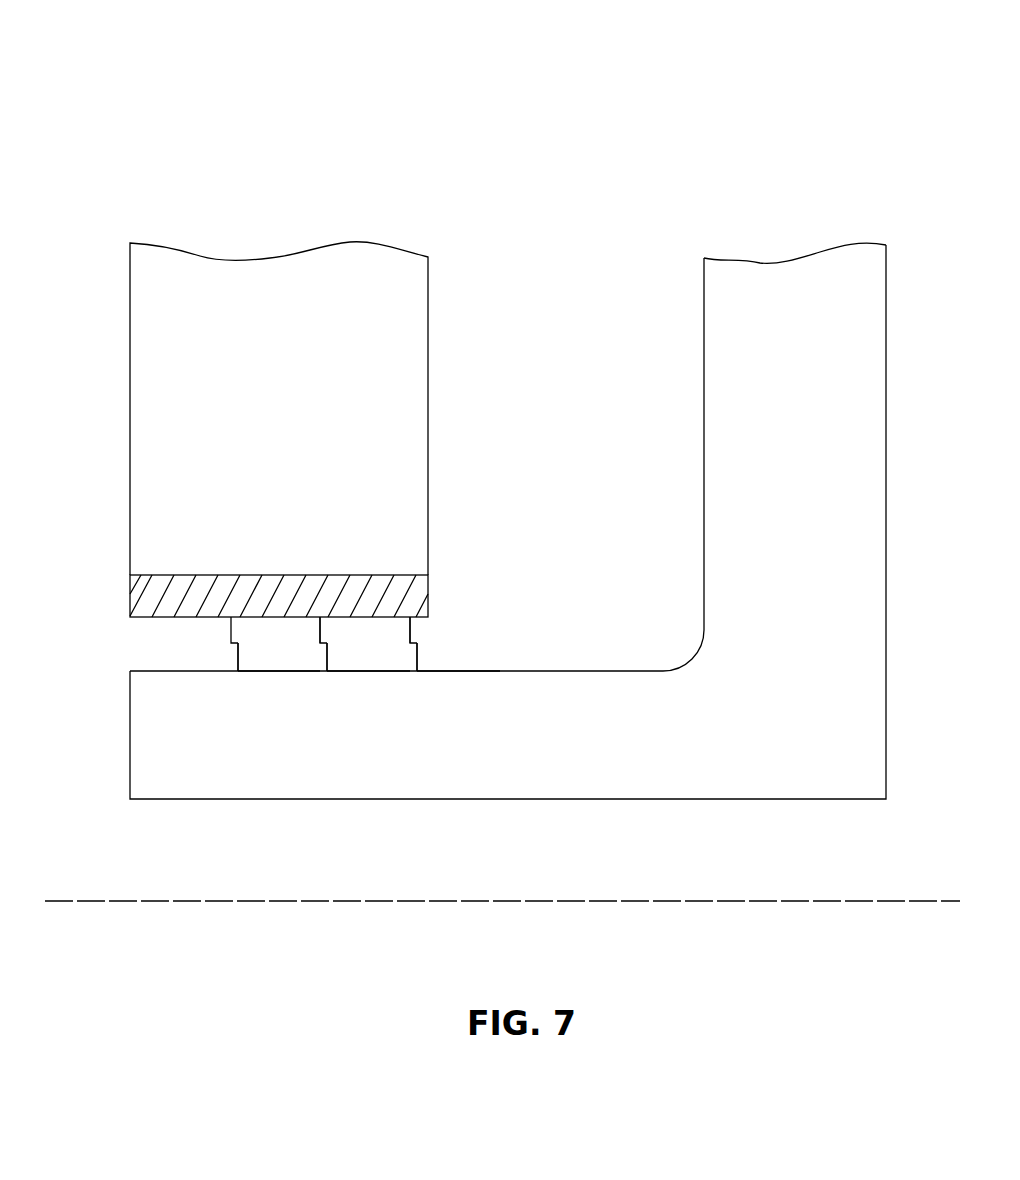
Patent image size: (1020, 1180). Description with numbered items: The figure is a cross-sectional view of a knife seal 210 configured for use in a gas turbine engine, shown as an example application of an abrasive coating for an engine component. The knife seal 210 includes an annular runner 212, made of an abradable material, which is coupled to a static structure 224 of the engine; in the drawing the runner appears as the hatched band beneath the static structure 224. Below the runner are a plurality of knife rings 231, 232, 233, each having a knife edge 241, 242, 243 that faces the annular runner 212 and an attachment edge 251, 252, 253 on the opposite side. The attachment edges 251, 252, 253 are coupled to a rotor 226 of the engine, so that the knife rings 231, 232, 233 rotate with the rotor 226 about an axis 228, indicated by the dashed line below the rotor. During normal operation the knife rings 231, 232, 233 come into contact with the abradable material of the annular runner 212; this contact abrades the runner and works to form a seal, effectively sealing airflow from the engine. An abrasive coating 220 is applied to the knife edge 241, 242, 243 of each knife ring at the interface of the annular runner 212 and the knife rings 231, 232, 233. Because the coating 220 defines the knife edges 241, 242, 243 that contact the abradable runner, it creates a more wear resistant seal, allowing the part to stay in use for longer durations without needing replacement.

The knife seal 210 is at (765, 58).
The annular runner 212 is at (126, 597).
The abrasive coating 220 is at (238, 643).
The static structure 224 is at (274, 290).
The rotor 226 is at (770, 272).
The axis 228 is at (775, 899).
The knife ring 231 is at (232, 658).
The knife ring 232 is at (318, 662).
The knife ring 233 is at (408, 662).
The knife edge 241 is at (228, 623).
The knife edge 242 is at (318, 623).
The knife edge 243 is at (408, 623).
The attachment edge 251 is at (246, 669).
The attachment edge 252 is at (336, 669).
The attachment edge 253 is at (426, 663).